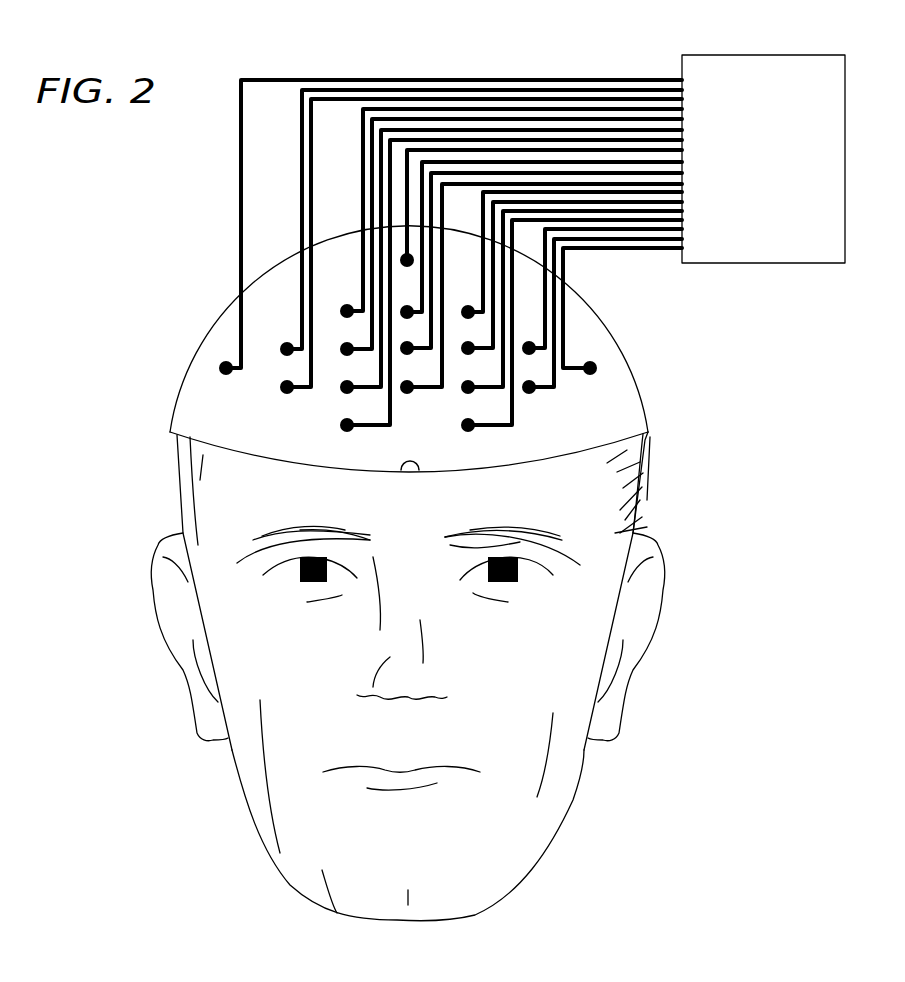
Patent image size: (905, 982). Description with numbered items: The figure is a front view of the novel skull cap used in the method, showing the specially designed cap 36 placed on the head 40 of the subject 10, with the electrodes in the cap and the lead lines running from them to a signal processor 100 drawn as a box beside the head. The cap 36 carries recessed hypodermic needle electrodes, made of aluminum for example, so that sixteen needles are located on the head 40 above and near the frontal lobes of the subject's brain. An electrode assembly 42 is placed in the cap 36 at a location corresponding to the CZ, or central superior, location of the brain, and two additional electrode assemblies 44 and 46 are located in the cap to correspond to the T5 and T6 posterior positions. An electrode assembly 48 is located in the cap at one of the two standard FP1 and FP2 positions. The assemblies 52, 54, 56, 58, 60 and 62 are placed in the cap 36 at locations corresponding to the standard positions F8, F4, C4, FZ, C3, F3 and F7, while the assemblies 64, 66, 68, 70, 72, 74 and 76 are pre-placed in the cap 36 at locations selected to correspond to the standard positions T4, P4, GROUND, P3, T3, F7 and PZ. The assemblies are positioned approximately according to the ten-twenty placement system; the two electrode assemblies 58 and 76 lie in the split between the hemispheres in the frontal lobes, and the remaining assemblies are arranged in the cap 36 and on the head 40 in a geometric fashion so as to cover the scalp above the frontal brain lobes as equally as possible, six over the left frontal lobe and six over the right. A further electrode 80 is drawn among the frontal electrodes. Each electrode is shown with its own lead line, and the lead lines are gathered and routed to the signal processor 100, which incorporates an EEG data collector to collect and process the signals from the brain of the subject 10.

The subject 10 is at (130, 785).
The cap 36 is at (217, 318).
The head 40 is at (642, 472).
The electrode assembly 42 is at (402, 256).
The electrode assembly 44 is at (468, 305).
The electrode assembly 46 is at (347, 300).
The electrode assembly 48 is at (340, 428).
The electrode assembly 52 is at (222, 365).
The electrode assembly 54 is at (282, 392).
The electrode assembly 56 is at (342, 383).
The electrode assembly 58 is at (407, 394).
The electrode assembly 60 is at (463, 390).
The electrode assembly 62 is at (530, 394).
The electrode assembly 64 is at (287, 345).
The electrode assembly 66 is at (342, 342).
The electrode assembly 68 is at (408, 354).
The electrode assembly 70 is at (465, 343).
The electrode assembly 72 is at (528, 343).
The electrode assembly 74 is at (598, 367).
The electrode assembly 76 is at (405, 307).
The electrode 80 is at (465, 430).
The signal processor 100 is at (745, 55).